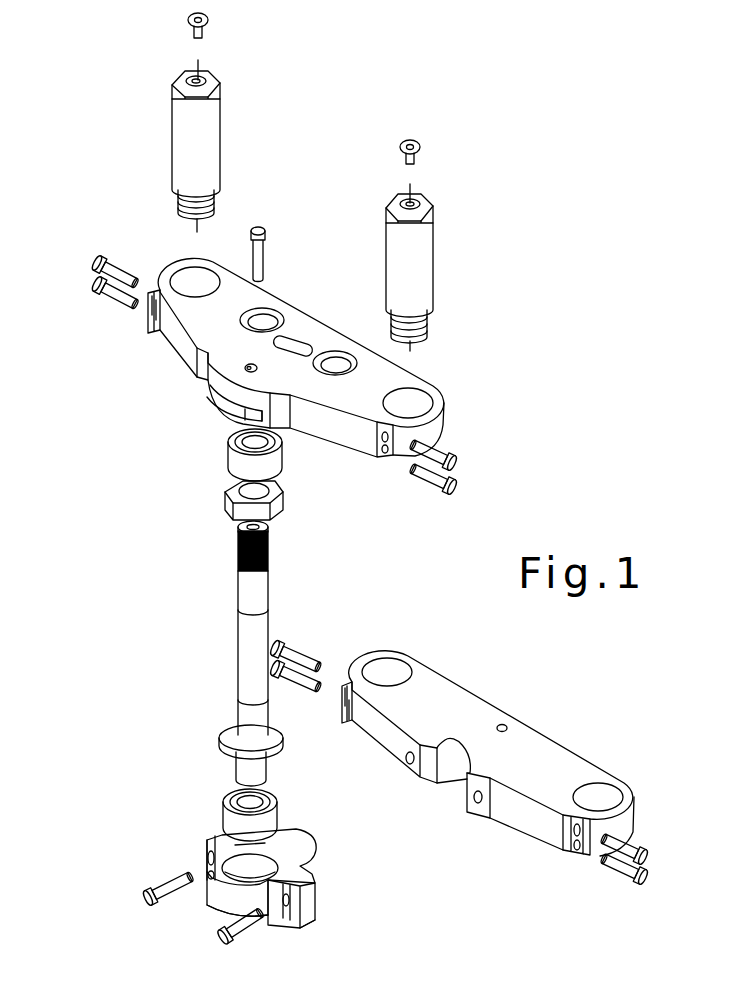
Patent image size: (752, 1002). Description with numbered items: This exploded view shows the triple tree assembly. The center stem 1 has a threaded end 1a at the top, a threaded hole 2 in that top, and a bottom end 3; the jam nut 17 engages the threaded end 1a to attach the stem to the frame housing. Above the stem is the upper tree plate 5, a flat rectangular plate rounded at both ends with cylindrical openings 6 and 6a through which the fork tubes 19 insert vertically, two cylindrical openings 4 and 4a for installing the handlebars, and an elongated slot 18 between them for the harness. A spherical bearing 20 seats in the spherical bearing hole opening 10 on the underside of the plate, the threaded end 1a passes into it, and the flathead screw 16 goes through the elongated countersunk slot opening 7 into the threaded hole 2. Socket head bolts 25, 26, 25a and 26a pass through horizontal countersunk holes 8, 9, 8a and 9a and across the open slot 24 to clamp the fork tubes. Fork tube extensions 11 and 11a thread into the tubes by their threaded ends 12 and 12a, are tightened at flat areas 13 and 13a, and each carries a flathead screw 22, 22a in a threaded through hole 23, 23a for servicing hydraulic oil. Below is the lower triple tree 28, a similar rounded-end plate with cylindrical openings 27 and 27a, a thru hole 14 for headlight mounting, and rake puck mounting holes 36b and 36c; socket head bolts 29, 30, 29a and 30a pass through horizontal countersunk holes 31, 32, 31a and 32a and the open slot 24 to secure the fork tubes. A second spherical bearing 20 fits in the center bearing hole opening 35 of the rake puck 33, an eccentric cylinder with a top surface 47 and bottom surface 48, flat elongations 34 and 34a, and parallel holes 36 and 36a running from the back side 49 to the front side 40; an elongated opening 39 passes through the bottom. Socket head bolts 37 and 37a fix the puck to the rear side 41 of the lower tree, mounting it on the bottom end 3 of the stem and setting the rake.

The center stem 1 is at (236, 650).
The threaded end 1a is at (237, 548).
The threaded hole 2 is at (237, 527).
The bottom end 3 is at (235, 768).
The cylindrical opening 4 is at (280, 322).
The cylindrical opening 4a is at (340, 366).
The upper tree plate 5 is at (372, 386).
The cylindrical opening 6 is at (436, 392).
The cylindrical opening 6a is at (180, 268).
The elongated countersunk slot opening 7 is at (246, 366).
The horizontal countersunk hole 8 is at (382, 458).
The horizontal countersunk hole 9 is at (392, 456).
The horizontal countersunk hole 8a is at (150, 298).
The horizontal countersunk hole 9a is at (152, 318).
The spherical bearing hole opening 10 is at (215, 410).
The fork tube extension 11 is at (434, 250).
The fork tube extension 11a is at (221, 128).
The threaded end 12 is at (429, 323).
The threaded end 12a is at (216, 203).
The flat area 13 is at (388, 203).
The flat area 13a is at (240, 82).
The thru hole 14 is at (497, 728).
The flathead screw 16 is at (264, 247).
The jam nut 17 is at (224, 487).
The elongated slot 18 is at (204, 390).
The fork tubes 19 is at (310, 345).
The spherical bearing 20 is at (227, 453).
The flathead screw 22 is at (421, 153).
The flathead screw 22a is at (210, 26).
The threaded through hole 23 is at (411, 266).
The threaded through hole 23a is at (199, 148).
The open slot 24 is at (160, 332).
The socket head bolt 25 is at (458, 460).
The socket head bolt 26 is at (458, 484).
The socket head bolt 25a is at (91, 262).
The socket head bolt 26a is at (91, 283).
The cylindrical opening 27 is at (624, 792).
The cylindrical opening 27a is at (405, 661).
The lower triple tree 28 is at (491, 753).
The socket head bolt 29 is at (649, 855).
The socket head bolt 30 is at (649, 875).
The socket head bolt 29a is at (312, 665).
The socket head bolt 30a is at (314, 676).
The horizontal countersunk hole 31 is at (588, 856).
The horizontal countersunk hole 32 is at (572, 852).
The horizontal countersunk hole 31a is at (345, 717).
The horizontal countersunk hole 32a is at (344, 705).
The rake puck 33 is at (302, 869).
The horizontal flat elongation 34 is at (316, 896).
The horizontal flat elongation 34a is at (206, 838).
The center bearing hole opening 35 is at (278, 861).
The parallel hole 36 is at (286, 918).
The parallel hole 36a is at (207, 861).
The rake puck mounting hole 36b is at (477, 803).
The rake puck mounting hole 36c is at (408, 759).
The socket head bolt 37 is at (218, 938).
The socket head bolt 37a is at (143, 897).
The elongated opening 39 is at (447, 776).
The front side 40 is at (513, 830).
The rear side 41 is at (380, 736).
The top surface 47 is at (257, 845).
The bottom surface 48 is at (305, 916).
The back side 49 is at (210, 910).